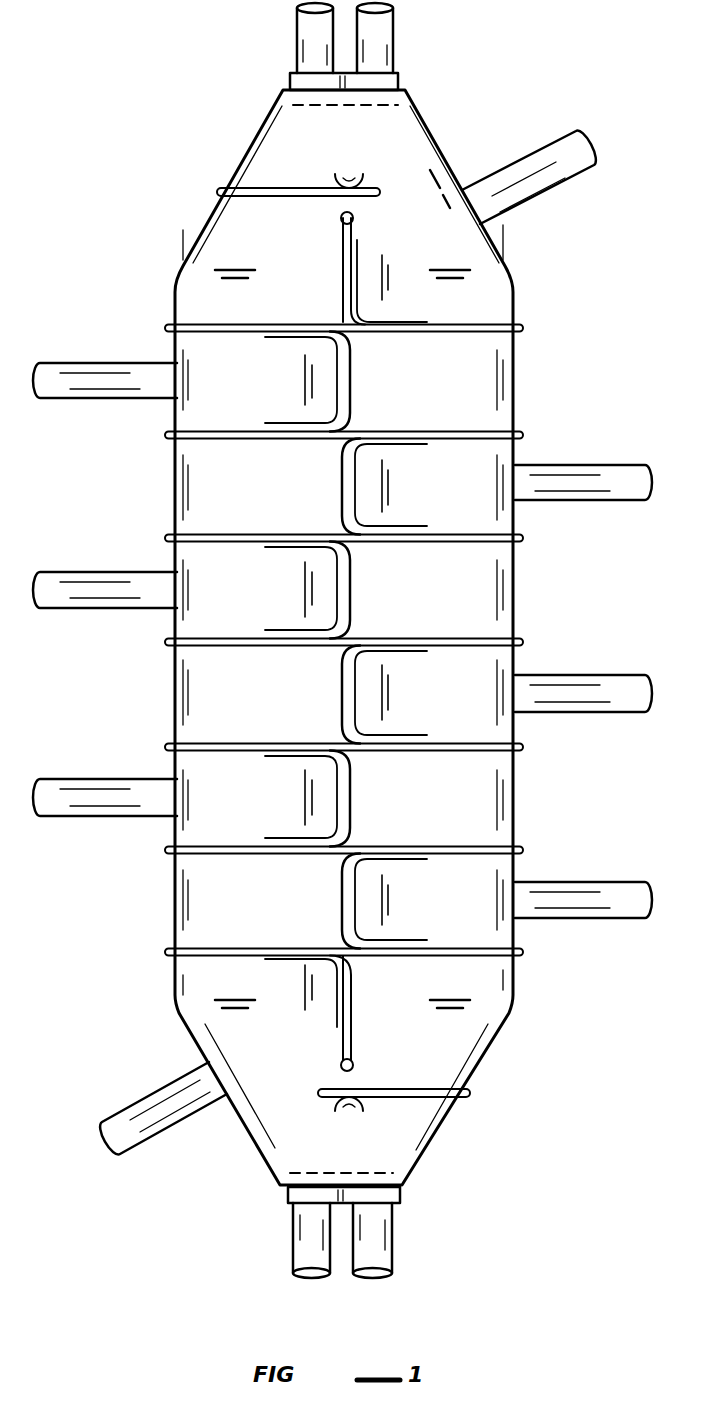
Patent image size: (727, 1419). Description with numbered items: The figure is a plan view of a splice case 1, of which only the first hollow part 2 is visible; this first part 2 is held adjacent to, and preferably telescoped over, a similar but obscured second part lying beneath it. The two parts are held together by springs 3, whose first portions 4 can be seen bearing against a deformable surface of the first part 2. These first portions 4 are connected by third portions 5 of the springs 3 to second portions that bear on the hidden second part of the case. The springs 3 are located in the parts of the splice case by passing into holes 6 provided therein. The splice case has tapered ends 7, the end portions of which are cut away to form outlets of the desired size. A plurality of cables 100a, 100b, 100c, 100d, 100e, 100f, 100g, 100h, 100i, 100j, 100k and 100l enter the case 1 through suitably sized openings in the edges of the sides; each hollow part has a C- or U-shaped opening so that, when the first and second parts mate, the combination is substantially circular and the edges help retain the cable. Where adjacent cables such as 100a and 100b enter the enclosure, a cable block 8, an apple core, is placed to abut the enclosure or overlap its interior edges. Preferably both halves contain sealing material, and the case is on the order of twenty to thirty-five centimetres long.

The splice case 1 is at (138, 297).
The first hollow part 2 is at (462, 367).
The springs 3 is at (167, 539).
The first portions 4 is at (305, 783).
The third portions 5 is at (168, 950).
The holes 6 is at (341, 216).
The tapered ends 7 is at (383, 137).
The cable block 8 is at (290, 78).
The cable 100a is at (308, 37).
The cable 100b is at (377, 32).
The cable 100c is at (548, 165).
The cable 100d is at (603, 483).
The cable 100e is at (603, 692).
The cable 100f is at (610, 897).
The cable 100g is at (378, 1248).
The cable 100h is at (305, 1250).
The cable 100i is at (145, 1118).
The cable 100j is at (70, 792).
The cable 100k is at (82, 585).
The cable 100l is at (83, 377).